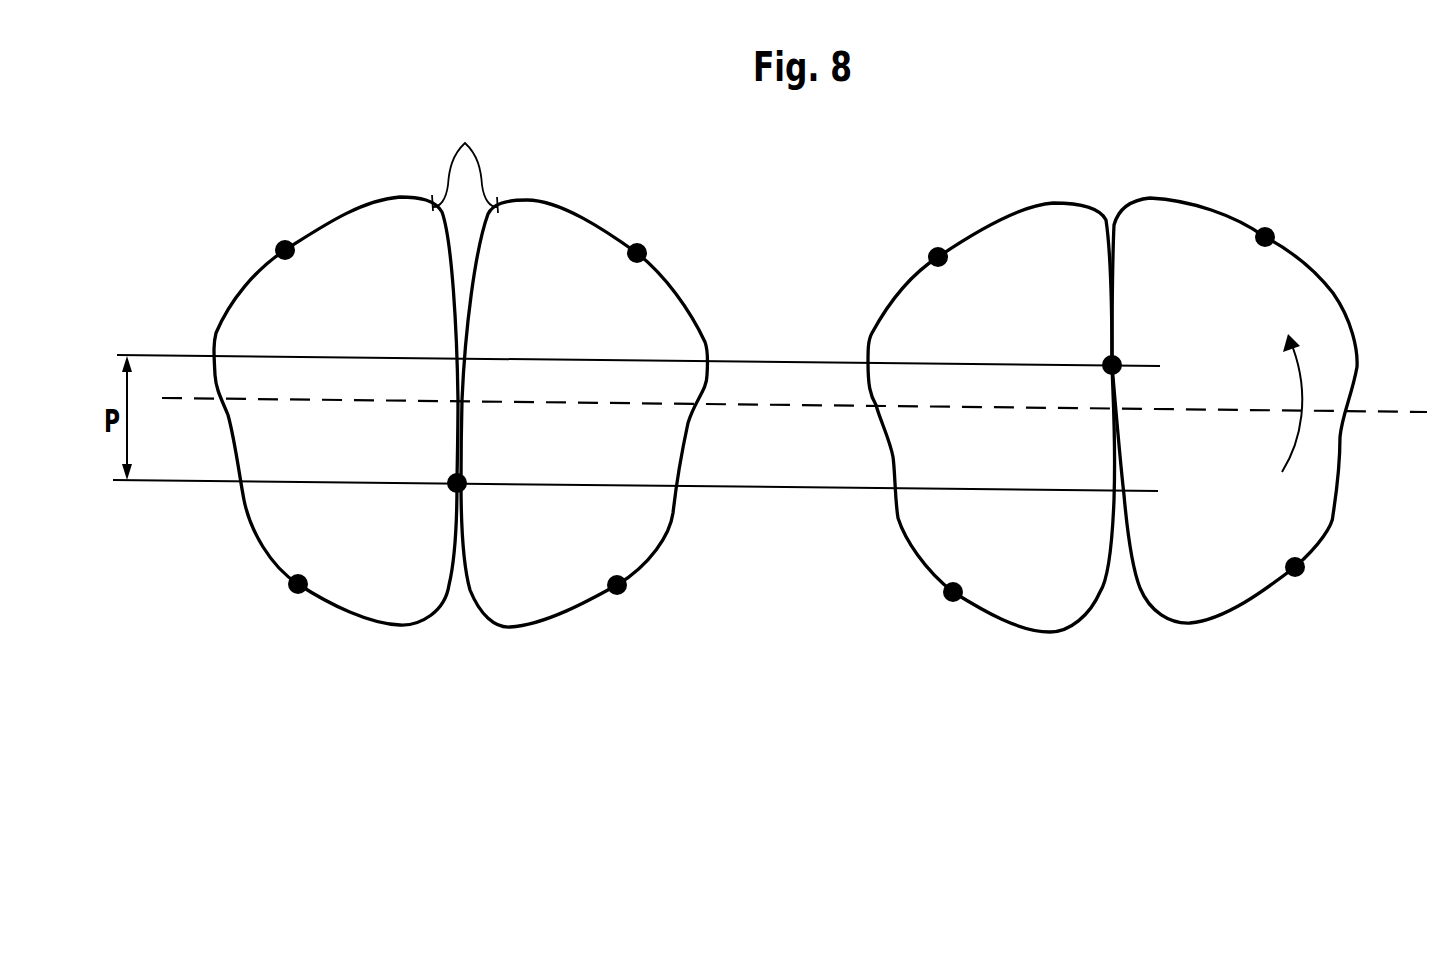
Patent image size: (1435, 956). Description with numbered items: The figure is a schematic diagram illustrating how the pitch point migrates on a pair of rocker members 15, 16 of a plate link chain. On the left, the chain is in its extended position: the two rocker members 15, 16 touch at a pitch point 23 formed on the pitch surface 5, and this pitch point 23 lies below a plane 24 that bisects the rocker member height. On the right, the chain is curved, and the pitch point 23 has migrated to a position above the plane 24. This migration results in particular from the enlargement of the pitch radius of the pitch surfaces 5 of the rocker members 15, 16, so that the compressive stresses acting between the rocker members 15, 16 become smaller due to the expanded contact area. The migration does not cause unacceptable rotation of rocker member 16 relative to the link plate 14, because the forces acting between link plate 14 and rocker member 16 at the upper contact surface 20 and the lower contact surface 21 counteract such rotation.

The pitch surface 5 is at (465, 160).
The link plate 14 is at (1011, 150).
The rocker member 15 is at (357, 592).
The rocker member 16 is at (555, 588).
The upper contact surface 20 is at (1273, 230).
The lower contact surface 21 is at (1303, 577).
The pitch point 23 is at (474, 472).
The plane 24 is at (1420, 414).